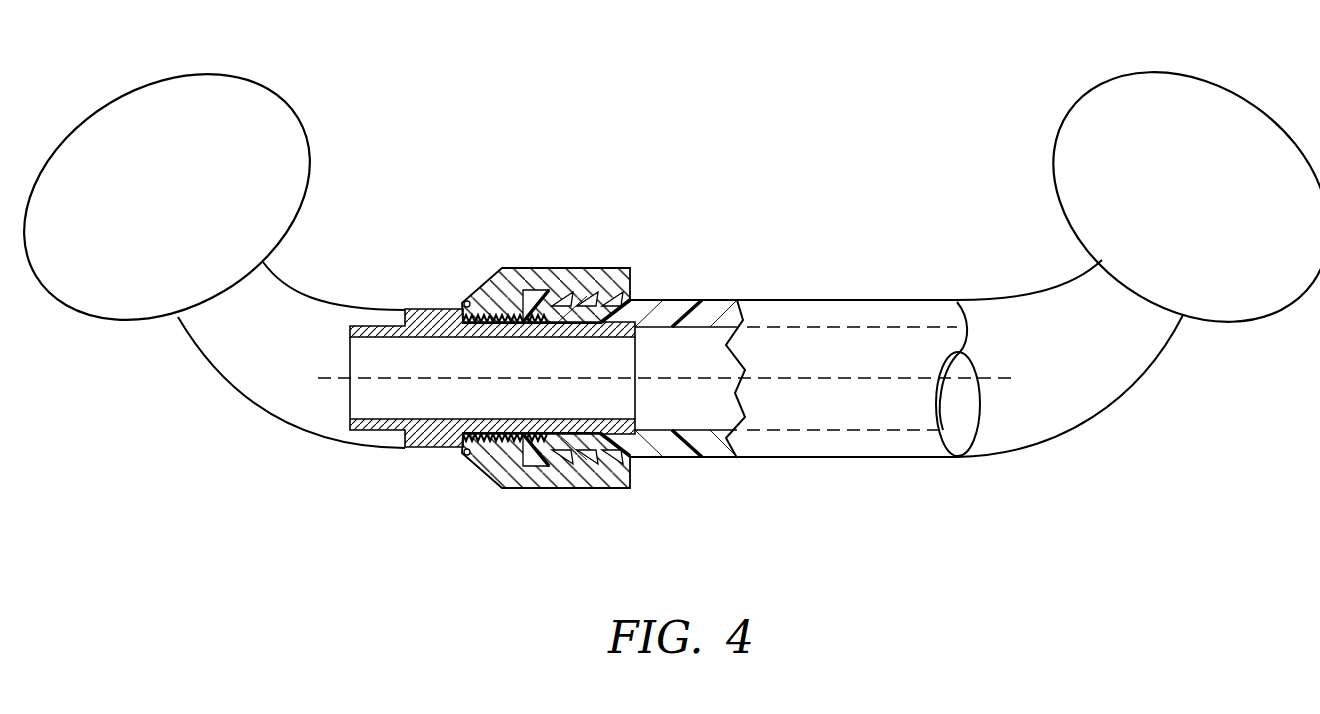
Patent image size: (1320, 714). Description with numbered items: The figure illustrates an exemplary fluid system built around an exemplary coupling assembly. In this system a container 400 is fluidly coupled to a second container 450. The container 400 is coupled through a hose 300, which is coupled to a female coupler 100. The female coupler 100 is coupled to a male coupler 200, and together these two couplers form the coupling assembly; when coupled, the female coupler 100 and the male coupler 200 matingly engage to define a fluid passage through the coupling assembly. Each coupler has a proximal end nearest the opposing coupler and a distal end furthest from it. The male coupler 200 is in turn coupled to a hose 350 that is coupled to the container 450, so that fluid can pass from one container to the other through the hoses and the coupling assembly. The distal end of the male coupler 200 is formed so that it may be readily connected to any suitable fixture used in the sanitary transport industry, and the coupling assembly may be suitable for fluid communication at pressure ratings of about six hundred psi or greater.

The female coupler 100 is at (550, 267).
The male coupler 200 is at (431, 308).
The hose 300 is at (702, 299).
The hose 350 is at (313, 300).
The container 400 is at (1057, 128).
The container 450 is at (297, 108).